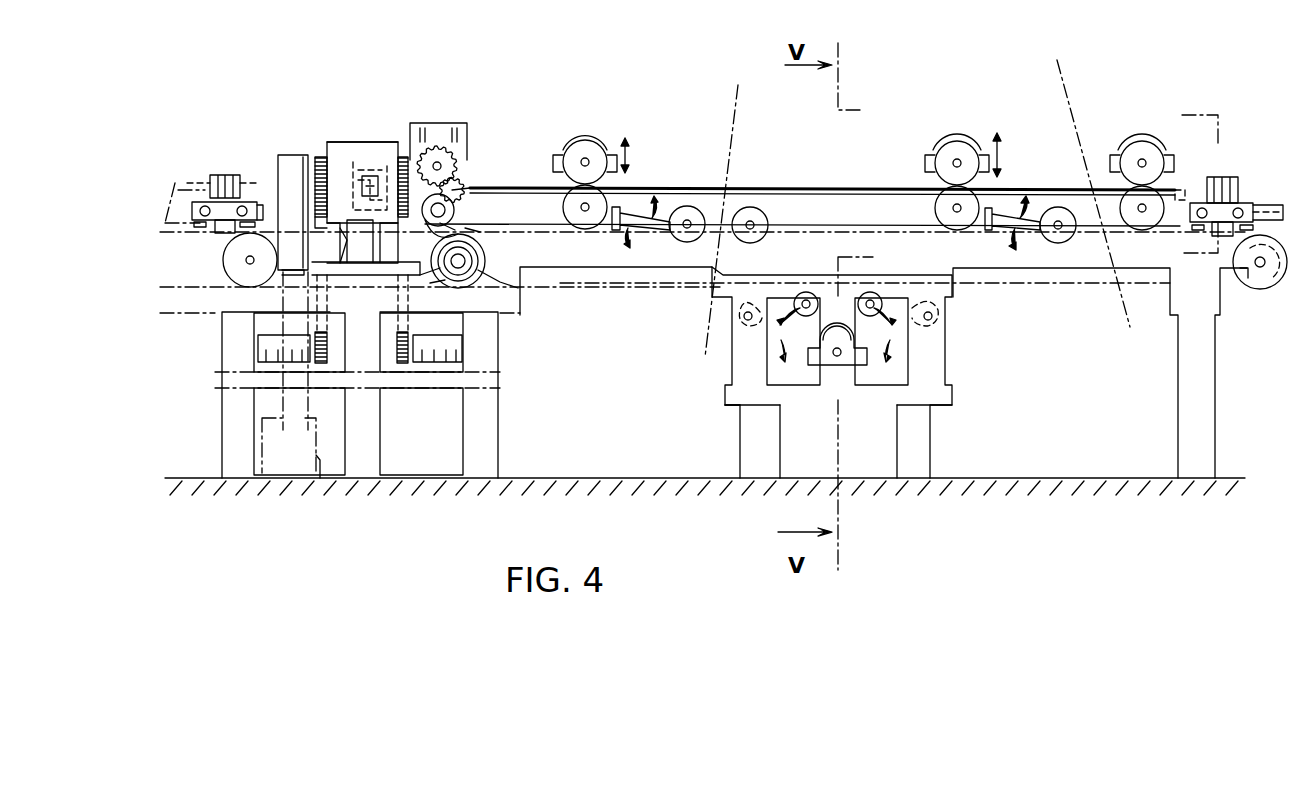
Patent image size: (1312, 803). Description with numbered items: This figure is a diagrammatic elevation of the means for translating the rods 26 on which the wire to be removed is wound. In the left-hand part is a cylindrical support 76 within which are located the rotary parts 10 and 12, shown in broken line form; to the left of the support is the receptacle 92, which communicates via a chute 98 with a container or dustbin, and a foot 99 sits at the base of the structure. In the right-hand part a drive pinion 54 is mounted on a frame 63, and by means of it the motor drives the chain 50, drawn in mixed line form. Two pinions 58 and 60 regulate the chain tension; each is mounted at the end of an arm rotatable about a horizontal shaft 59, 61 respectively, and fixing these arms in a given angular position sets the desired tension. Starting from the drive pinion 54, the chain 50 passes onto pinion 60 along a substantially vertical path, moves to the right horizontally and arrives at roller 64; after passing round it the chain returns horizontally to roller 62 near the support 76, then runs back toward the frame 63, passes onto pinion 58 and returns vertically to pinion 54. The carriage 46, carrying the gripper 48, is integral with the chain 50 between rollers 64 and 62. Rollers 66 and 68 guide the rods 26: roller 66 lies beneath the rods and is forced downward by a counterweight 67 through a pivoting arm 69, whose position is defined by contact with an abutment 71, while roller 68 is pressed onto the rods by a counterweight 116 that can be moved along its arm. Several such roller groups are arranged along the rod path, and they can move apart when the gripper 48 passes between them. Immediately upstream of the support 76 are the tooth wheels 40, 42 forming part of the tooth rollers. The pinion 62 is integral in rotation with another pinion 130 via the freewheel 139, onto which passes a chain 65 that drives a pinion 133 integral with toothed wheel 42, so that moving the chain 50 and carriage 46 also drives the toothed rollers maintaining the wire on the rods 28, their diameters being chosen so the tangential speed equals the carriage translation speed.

The rotary part 10 is at (390, 165).
The rotary part 12 is at (358, 165).
The rods 26 is at (690, 186).
The rods 28 is at (748, 186).
The tooth wheel 40 is at (447, 163).
The tooth wheel 42 is at (450, 203).
The carriage 46 is at (1248, 213).
The gripper 48 is at (1230, 172).
The chain 50 is at (1038, 282).
The drive pinion 54 is at (806, 356).
The pinion 58 is at (790, 312).
The horizontal shaft 59 is at (742, 316).
The pinion 60 is at (880, 318).
The horizontal shaft 61 is at (932, 322).
The roller 62 is at (462, 286).
The frame 63 is at (728, 404).
The roller 64 is at (1262, 290).
The chain 65 is at (466, 229).
The roller 66 is at (945, 222).
The counterweight 67 is at (1060, 240).
The roller 68 is at (940, 175).
The arm 69 is at (1005, 215).
The abutment 71 is at (632, 215).
The cylindrical support 76 is at (332, 160).
The receptacle 92 is at (290, 168).
The chute 98 is at (280, 397).
The foot 99 is at (322, 455).
The counterweight 116 is at (960, 133).
The pinion 130 is at (475, 272).
The pinion 133 is at (455, 212).
The freewheel 139 is at (432, 283).